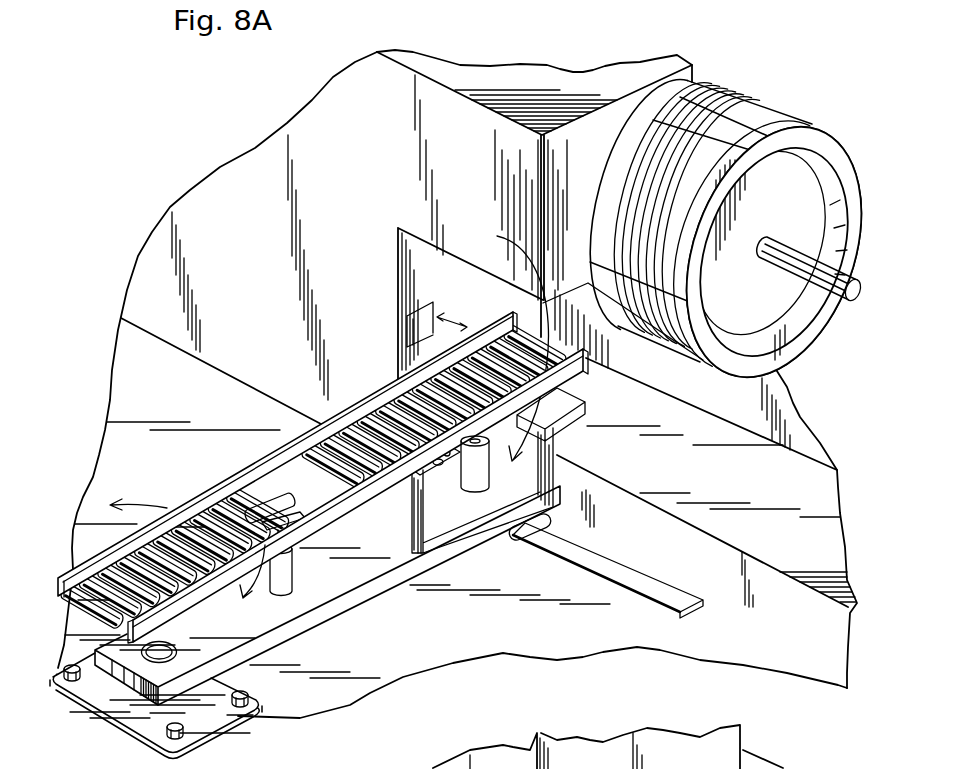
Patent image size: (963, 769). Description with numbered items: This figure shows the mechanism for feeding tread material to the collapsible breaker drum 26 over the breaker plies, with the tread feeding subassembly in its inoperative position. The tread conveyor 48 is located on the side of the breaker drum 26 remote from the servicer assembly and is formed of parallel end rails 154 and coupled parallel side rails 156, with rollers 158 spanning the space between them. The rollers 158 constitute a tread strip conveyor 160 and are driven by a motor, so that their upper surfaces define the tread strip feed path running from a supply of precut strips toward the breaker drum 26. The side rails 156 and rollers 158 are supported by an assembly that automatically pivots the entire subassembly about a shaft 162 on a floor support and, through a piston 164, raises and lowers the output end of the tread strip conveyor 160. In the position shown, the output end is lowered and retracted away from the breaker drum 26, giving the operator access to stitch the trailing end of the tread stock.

The breaker drum 26 is at (777, 132).
The tread conveyor 48 is at (445, 543).
The end rails 154 is at (361, 422).
The side rails 156 is at (317, 430).
The rollers 158 is at (257, 470).
The tread strip conveyor 160 is at (401, 406).
The shaft 162 is at (157, 653).
The piston 164 is at (488, 477).